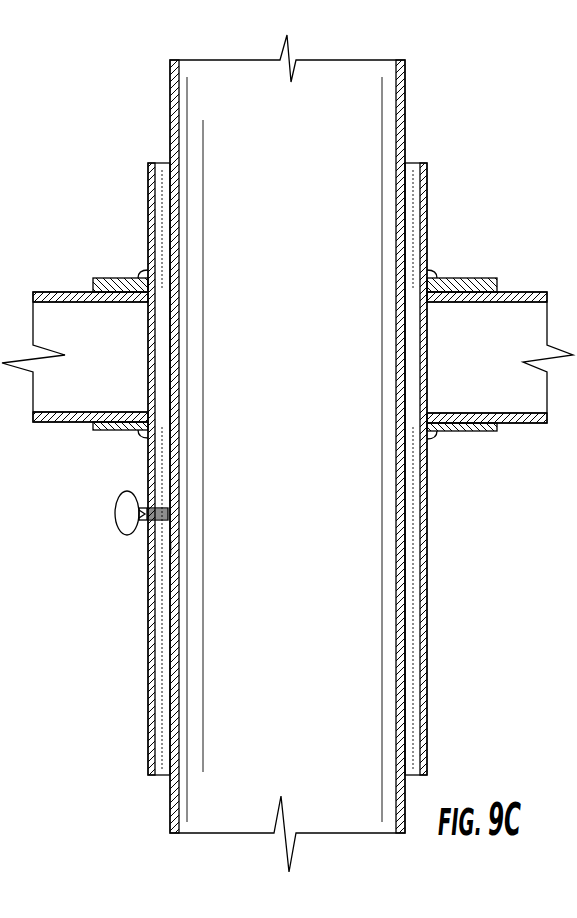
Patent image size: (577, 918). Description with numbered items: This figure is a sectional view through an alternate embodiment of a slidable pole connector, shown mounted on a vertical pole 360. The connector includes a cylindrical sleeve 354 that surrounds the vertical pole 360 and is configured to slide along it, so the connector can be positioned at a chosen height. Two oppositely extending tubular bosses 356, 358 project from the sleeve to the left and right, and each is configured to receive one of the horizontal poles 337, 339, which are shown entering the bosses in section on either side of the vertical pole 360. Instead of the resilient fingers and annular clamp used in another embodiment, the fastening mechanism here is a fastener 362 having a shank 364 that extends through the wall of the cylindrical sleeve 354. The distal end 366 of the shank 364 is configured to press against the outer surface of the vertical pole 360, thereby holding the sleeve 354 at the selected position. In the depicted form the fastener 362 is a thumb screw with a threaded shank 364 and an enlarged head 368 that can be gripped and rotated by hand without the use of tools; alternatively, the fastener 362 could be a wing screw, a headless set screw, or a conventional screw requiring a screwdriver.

The vertical pole 360 is at (369, 82).
The cylindrical sleeve 354 is at (425, 209).
The horizontal pole 337 is at (75, 335).
The horizontal pole 339 is at (507, 348).
The tubular boss 356 is at (110, 432).
The tubular boss 358 is at (465, 285).
The shank 364 is at (140, 506).
The enlarged head 368 is at (124, 513).
The fastener 362 is at (142, 526).
The distal end 366 is at (175, 547).